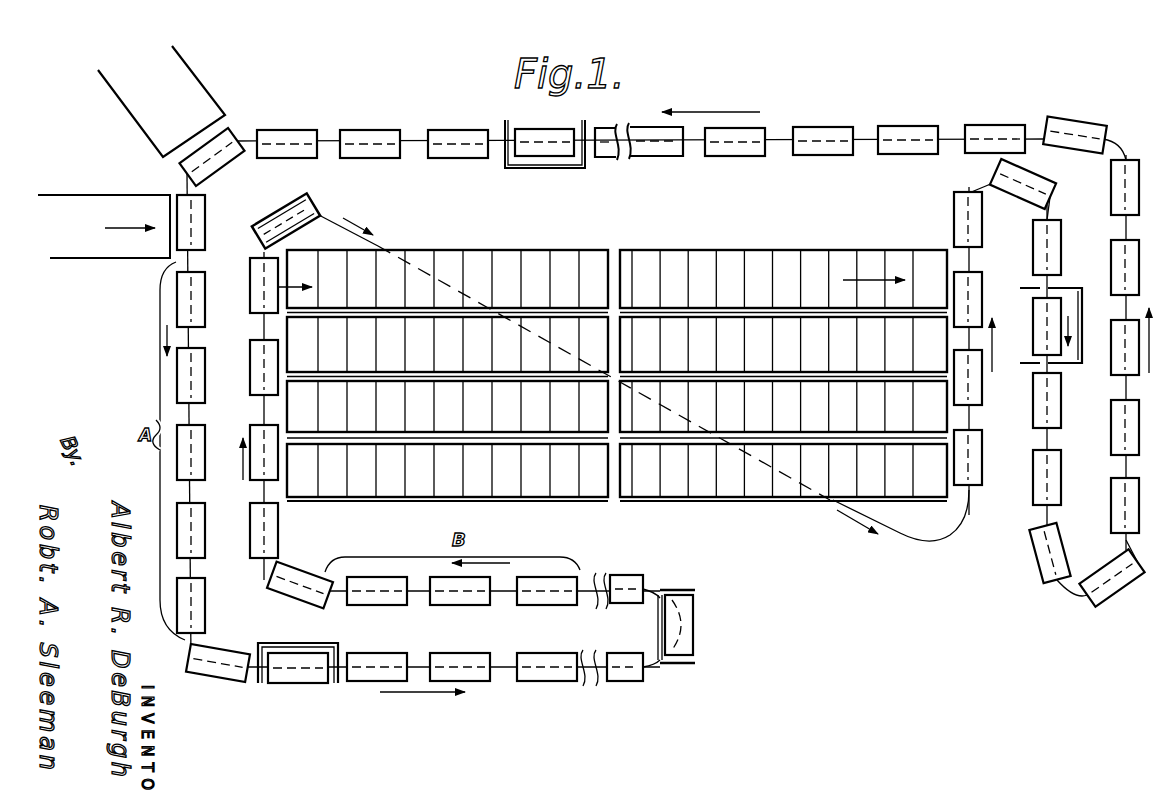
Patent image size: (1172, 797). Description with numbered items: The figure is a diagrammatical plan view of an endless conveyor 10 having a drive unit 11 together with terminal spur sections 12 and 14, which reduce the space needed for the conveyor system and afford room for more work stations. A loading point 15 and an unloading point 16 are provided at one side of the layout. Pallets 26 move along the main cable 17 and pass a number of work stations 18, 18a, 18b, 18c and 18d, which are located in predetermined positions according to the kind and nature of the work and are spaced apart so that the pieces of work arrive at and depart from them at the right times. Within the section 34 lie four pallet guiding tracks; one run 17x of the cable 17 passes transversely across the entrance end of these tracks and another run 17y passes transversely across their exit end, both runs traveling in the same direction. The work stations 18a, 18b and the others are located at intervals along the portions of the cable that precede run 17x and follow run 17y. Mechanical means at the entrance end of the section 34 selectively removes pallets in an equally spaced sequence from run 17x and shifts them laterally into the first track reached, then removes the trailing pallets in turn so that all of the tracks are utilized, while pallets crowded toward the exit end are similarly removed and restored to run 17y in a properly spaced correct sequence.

The endless conveyor 10 is at (451, 126).
The drive unit 11 is at (283, 204).
The terminal spur section 12 is at (351, 692).
The terminal spur section 14 is at (1030, 592).
The loading point 15 is at (80, 193).
The unloading point 16 is at (137, 126).
The main cable 17 is at (259, 254).
The cable run 17x is at (263, 410).
The cable run 17y is at (970, 258).
The work station 18 is at (272, 641).
The work station 18a is at (282, 690).
The work station 18b is at (700, 636).
The work station 18c is at (1098, 272).
The work station 18d is at (545, 136).
The pallet 26 is at (470, 158).
The section 34 is at (697, 250).